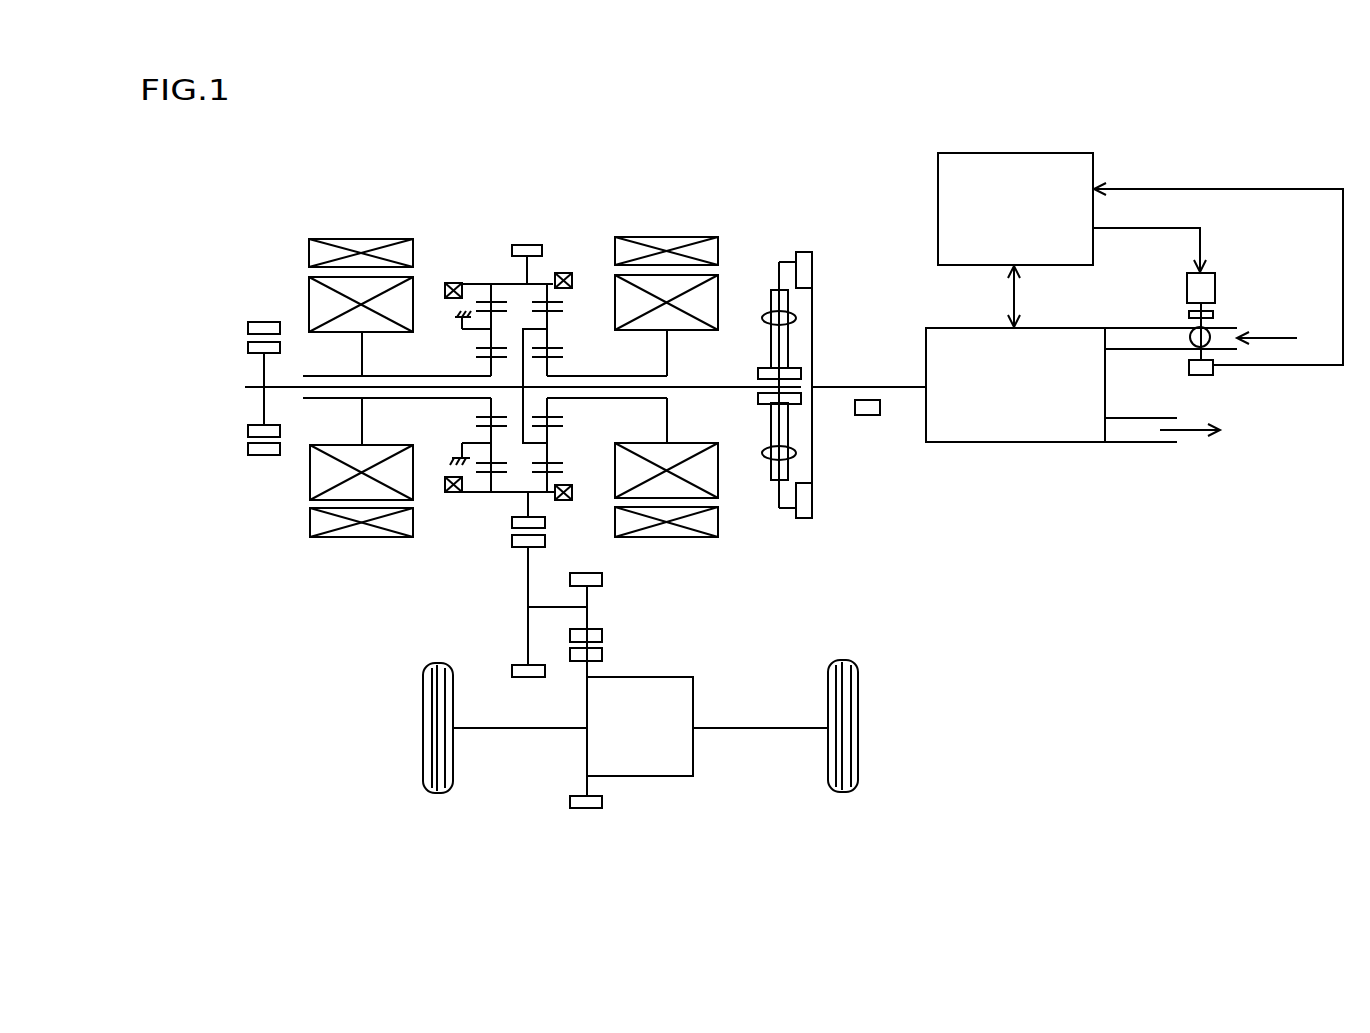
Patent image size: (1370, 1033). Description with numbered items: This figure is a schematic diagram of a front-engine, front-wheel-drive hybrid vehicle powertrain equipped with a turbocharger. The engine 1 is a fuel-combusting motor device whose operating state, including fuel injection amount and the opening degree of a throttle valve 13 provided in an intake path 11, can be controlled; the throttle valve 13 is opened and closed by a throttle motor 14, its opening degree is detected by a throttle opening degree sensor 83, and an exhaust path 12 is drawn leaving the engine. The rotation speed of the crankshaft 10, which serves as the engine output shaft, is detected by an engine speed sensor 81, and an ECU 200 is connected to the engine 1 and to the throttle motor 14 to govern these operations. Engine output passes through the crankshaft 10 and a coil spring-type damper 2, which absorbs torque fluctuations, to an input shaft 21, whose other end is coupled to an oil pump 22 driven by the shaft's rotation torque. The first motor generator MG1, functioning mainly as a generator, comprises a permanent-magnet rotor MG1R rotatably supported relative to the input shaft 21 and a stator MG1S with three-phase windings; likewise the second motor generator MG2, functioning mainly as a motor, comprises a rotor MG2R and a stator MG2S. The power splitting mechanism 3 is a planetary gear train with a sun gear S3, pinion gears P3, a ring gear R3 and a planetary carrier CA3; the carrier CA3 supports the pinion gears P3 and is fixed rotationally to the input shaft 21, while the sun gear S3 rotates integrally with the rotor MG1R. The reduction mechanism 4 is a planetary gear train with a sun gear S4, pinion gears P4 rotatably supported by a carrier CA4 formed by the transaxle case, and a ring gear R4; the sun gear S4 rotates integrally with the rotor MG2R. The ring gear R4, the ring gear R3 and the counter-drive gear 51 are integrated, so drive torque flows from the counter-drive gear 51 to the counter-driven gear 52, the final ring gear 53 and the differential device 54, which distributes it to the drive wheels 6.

The engine 1 is at (1024, 443).
The damper 2 is at (817, 502).
The power splitting mechanism 3 is at (537, 356).
The reduction mechanism 4 is at (483, 374).
The drive wheels 6 is at (423, 690).
The crankshaft 10 is at (860, 386).
The intake path 11 is at (1143, 338).
The exhaust passage 12 is at (1137, 433).
The throttle valve 13 is at (1213, 333).
The throttle motor 14 is at (1215, 273).
The input shaft 21 is at (705, 387).
The oil pump 22 is at (262, 322).
The counter-drive gear 51 is at (533, 507).
The counter-driven gear 52 is at (528, 589).
The final ring gear 53 is at (588, 600).
The differential device 54 is at (651, 777).
The engine speed sensor 81 is at (867, 415).
The throttle opening degree sensor 83 is at (1202, 375).
The ECU 200 is at (937, 202).
The first motor generator MG1 is at (751, 339).
The stator MG1S is at (680, 237).
The rotor MG1R is at (720, 284).
The second motor generator MG2 is at (246, 374).
The stator MG2S is at (311, 240).
The rotor MG2R is at (311, 283).
The ring gear R3 is at (543, 283).
The sun gear S3 is at (565, 352).
The pinion gears P3 is at (554, 347).
The planetary carrier CA3 is at (518, 444).
The ring gear R4 is at (506, 283).
The sun gear S4 is at (478, 352).
The pinion gears P4 is at (477, 427).
The carrier CA4 is at (456, 451).